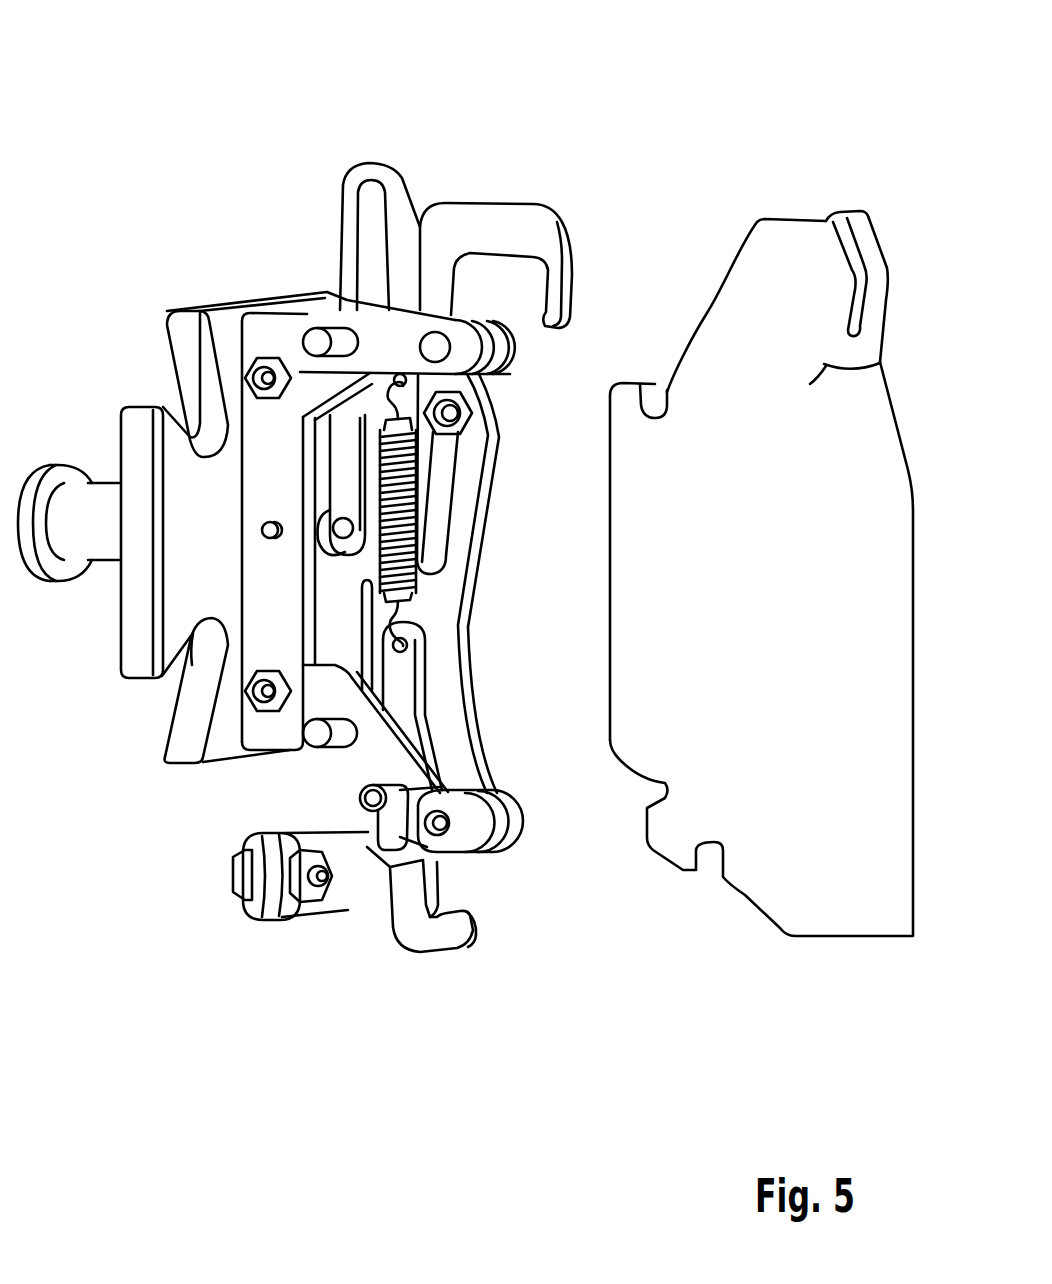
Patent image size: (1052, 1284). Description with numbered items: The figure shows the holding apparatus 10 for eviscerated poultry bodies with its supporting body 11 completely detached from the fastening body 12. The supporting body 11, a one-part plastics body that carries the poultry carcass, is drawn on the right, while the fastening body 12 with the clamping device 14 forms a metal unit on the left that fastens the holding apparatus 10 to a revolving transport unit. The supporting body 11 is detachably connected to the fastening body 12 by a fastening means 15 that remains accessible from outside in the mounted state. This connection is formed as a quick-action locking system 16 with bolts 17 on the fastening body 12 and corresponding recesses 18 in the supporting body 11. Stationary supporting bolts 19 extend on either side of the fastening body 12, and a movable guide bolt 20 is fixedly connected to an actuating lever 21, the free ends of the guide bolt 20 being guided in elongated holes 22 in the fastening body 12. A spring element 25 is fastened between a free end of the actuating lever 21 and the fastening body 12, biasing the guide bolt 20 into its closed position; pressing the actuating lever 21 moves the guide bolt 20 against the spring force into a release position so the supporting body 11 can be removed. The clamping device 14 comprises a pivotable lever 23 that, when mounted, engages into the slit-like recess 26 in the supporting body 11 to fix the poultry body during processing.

The holding apparatus 10 is at (645, 94).
The supporting body 11 is at (710, 337).
The fastening body 12 is at (254, 497).
The clamping device 14 is at (515, 178).
The fastening means 15 is at (445, 634).
The quick-action locking system 16 is at (466, 978).
The bolts 17 is at (325, 306).
The recesses 18 is at (648, 395).
The supporting bolts 19 is at (317, 338).
The movable guide bolt 20 is at (383, 802).
The actuating lever 21 is at (462, 927).
The elongated holes 22 is at (400, 837).
The pivotable lever 23 is at (557, 257).
The spring element 25 is at (413, 490).
The slit-like recess 26 is at (860, 265).